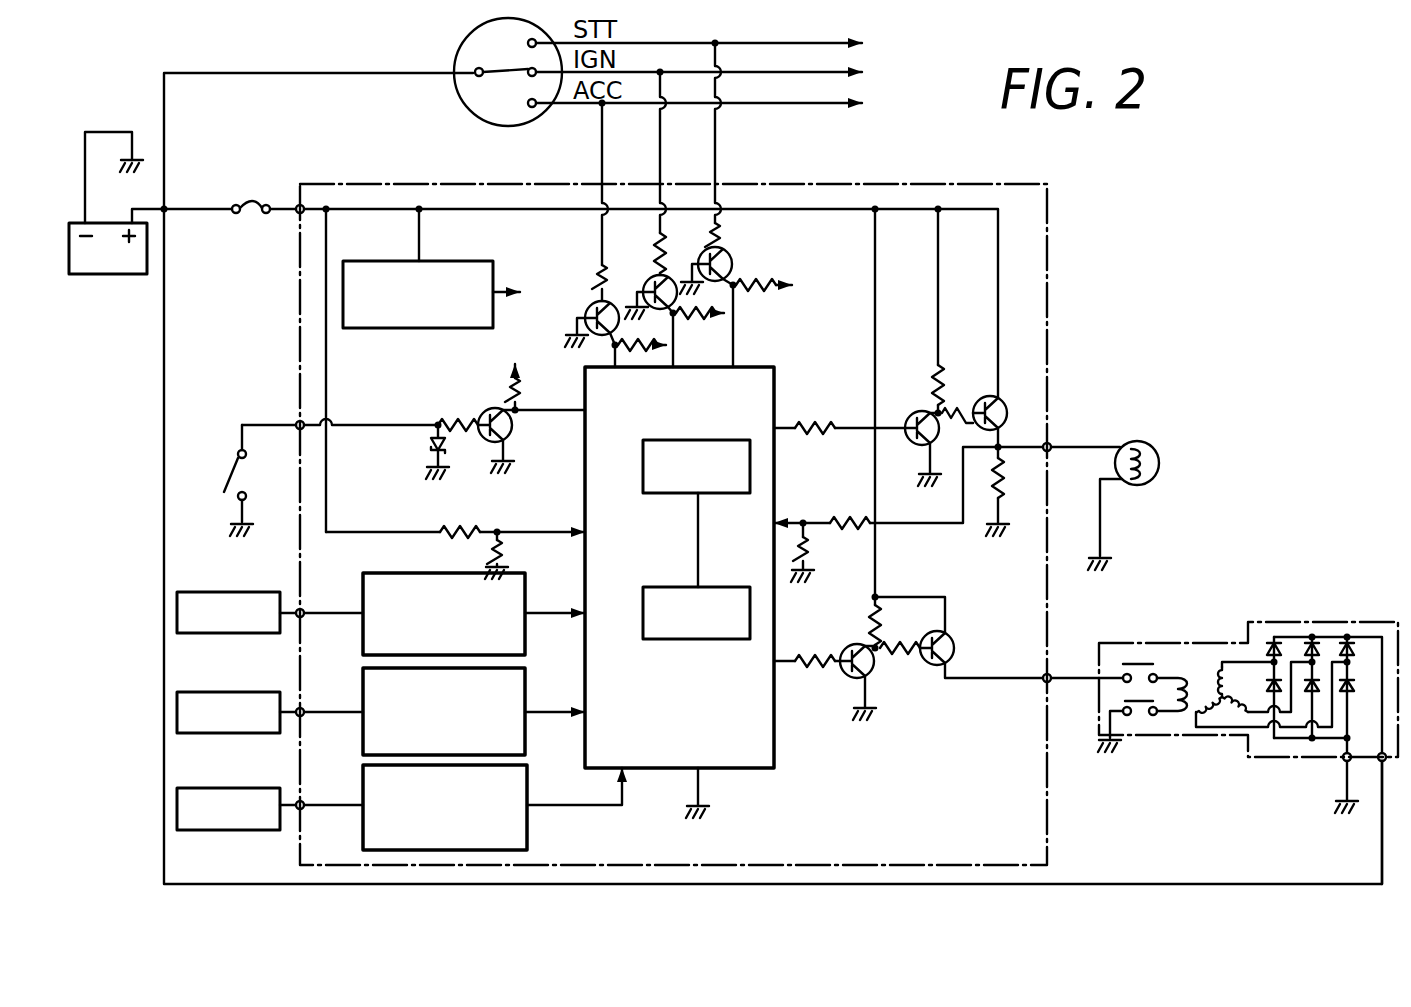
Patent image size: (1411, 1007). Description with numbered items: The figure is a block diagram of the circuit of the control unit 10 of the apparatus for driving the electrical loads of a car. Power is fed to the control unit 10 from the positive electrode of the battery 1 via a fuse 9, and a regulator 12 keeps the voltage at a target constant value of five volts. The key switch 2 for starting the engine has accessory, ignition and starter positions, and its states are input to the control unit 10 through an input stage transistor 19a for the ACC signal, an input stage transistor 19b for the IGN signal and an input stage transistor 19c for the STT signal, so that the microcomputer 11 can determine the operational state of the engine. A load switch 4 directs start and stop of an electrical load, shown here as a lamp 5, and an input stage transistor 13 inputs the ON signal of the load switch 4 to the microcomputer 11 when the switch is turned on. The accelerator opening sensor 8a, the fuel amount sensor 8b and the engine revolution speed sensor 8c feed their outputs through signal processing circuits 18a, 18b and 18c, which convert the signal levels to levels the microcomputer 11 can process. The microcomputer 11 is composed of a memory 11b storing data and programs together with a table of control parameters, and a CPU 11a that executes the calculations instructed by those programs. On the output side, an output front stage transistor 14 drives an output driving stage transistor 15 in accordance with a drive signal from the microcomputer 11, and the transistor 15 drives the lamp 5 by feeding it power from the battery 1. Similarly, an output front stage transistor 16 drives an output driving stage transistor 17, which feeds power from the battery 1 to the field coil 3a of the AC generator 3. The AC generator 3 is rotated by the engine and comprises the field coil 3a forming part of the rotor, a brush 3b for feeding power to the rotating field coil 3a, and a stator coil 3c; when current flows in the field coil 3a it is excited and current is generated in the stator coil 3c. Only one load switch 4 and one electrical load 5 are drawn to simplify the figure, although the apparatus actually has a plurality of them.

The battery 1 is at (128, 277).
The key switch 2 is at (457, 100).
The AC generator 3 is at (1248, 714).
The field coil 3a is at (1177, 674).
The brush 3b is at (1140, 662).
The stator coil 3c is at (1220, 708).
The load switch 4 is at (213, 494).
The lamp 5 is at (1141, 439).
The accelerator opening sensor 8a is at (270, 591).
The fuel amount sensor 8b is at (270, 691).
The engine revolution speed sensor 8c is at (268, 830).
The fuse 9 is at (255, 202).
The control unit 10 is at (1047, 220).
The microcomputer 11 is at (714, 573).
The CPU 11a is at (750, 487).
The memory 11b is at (750, 622).
The regulator 12 is at (473, 261).
The input stage transistor 13 is at (479, 442).
The output front stage transistor 14 is at (917, 413).
The output driving stage transistor 15 is at (986, 398).
The output front stage transistor 16 is at (843, 682).
The output driving stage transistor 17 is at (952, 638).
The signal processing circuit 18a is at (363, 589).
The signal processing circuit 18b is at (363, 689).
The signal processing circuit 18c is at (363, 786).
The input stage transistor 19a is at (590, 302).
The input stage transistor 19b is at (645, 282).
The input stage transistor 19c is at (702, 262).